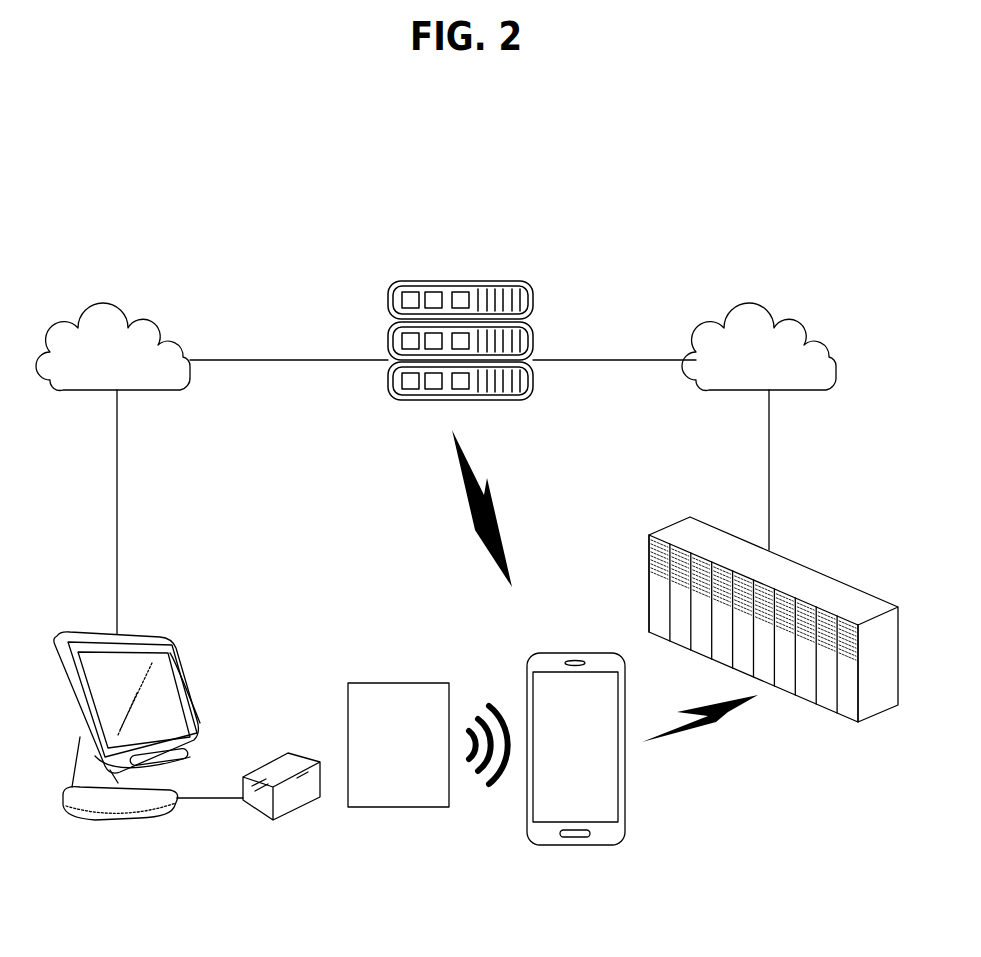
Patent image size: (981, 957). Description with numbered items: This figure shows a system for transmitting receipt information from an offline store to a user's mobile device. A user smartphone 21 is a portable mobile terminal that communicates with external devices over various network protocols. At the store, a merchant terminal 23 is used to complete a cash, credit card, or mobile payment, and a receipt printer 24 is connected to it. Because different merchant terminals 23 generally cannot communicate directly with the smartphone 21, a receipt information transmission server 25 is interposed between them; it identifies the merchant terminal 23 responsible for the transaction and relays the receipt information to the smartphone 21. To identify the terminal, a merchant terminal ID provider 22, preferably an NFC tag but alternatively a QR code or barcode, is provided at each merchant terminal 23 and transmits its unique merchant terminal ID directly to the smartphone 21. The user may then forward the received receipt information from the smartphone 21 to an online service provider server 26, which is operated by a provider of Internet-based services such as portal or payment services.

The user smartphone 21 is at (577, 845).
The merchant terminal ID provider 22 is at (408, 807).
The merchant terminal 23 is at (138, 812).
The receipt printer 24 is at (257, 820).
The receipt information transmission server 25 is at (489, 281).
The online service provider server 26 is at (811, 566).